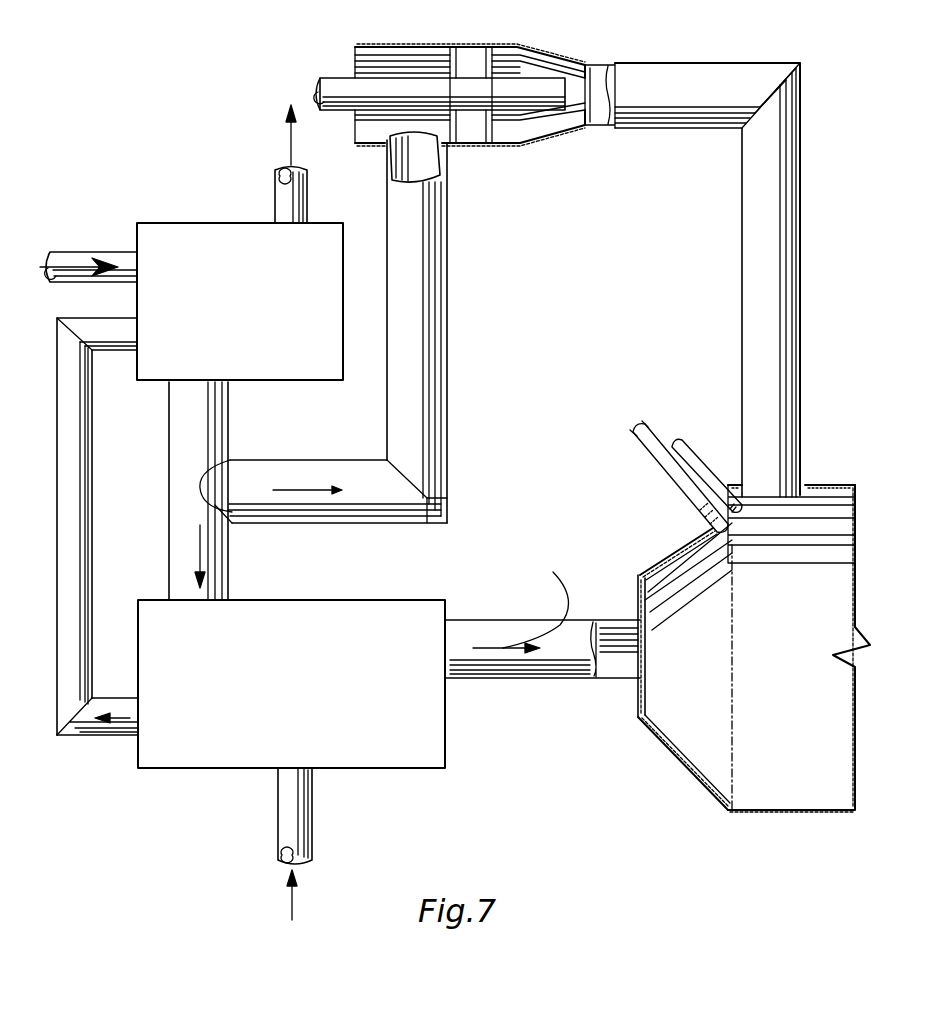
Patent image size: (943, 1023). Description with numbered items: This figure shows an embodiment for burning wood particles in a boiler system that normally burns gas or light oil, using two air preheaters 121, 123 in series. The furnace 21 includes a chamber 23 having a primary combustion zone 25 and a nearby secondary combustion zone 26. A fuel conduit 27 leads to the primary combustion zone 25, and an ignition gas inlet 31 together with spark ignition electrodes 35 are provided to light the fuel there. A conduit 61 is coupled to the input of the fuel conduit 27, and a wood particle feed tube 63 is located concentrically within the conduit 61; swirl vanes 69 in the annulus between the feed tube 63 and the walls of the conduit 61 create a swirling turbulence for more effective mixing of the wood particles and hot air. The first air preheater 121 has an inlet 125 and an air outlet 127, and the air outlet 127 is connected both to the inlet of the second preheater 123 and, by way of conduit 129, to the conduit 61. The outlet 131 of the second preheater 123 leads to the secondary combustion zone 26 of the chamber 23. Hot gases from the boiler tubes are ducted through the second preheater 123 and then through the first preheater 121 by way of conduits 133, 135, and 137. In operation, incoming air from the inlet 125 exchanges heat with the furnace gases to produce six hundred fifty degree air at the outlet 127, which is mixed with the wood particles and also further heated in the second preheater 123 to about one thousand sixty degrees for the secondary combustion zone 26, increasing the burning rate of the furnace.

The furnace 21 is at (788, 812).
The chamber 23 is at (700, 776).
The primary combustion zone 25 is at (790, 510).
The secondary combustion zone 26 is at (695, 678).
The fuel conduit 27 is at (678, 63).
The ignition gas inlet 31 is at (705, 440).
The spark ignition electrodes 35 is at (672, 480).
The conduit 61 is at (500, 146).
The wood particle feed tube 63 is at (410, 76).
The swirl vanes 69 is at (478, 65).
The air preheater 121 is at (205, 222).
The air preheater 123 is at (250, 770).
The inlet 125 is at (100, 252).
The air outlet 127 is at (168, 500).
The conduit 129 is at (450, 320).
The outlet 131 is at (556, 681).
The conduit 133 is at (312, 828).
The conduit 135 is at (118, 740).
The conduit 137 is at (310, 205).